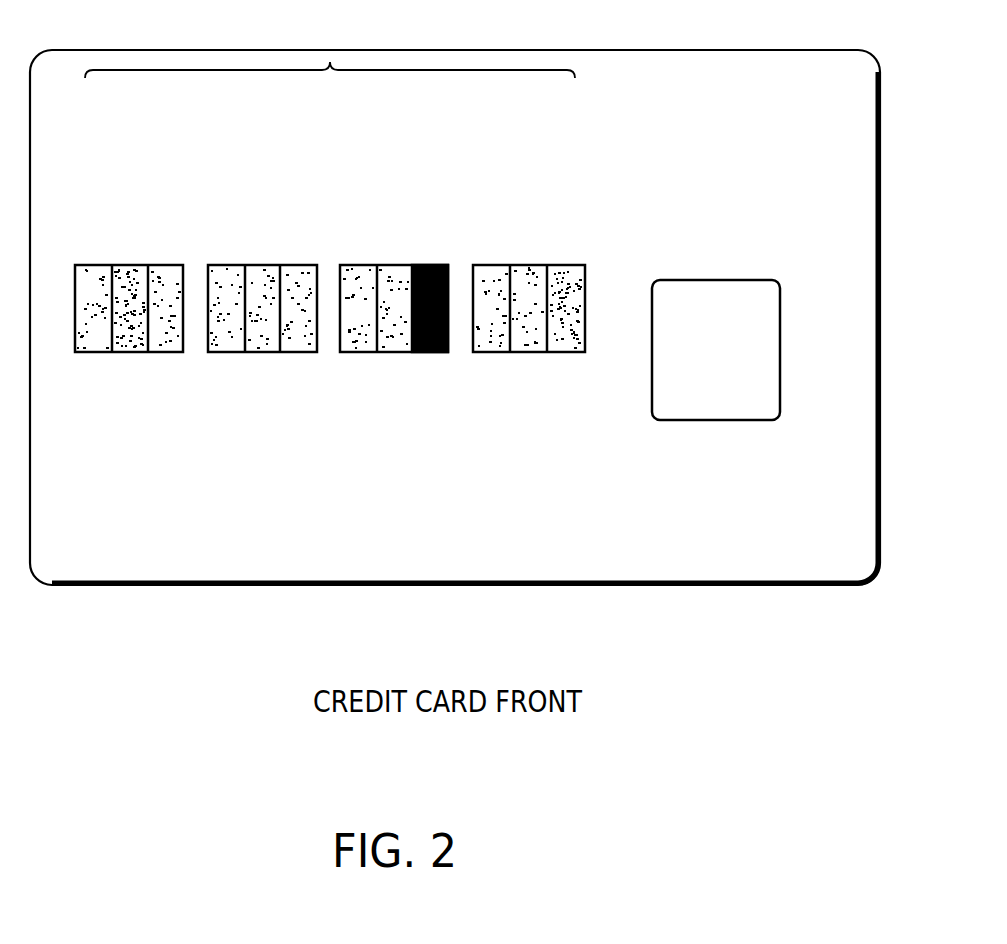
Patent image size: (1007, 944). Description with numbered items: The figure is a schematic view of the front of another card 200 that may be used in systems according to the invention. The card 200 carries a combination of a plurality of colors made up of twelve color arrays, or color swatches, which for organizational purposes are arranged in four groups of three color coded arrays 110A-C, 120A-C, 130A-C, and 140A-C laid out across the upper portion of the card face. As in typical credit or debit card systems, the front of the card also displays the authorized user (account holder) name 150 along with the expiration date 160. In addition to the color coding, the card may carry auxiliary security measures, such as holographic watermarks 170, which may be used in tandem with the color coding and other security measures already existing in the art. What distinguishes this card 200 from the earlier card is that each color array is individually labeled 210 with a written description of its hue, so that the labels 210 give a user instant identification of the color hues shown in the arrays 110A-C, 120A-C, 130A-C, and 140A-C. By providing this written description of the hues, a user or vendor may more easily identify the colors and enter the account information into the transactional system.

The first group of color coded arrays 110A-C is at (183, 365).
The second group of color coded arrays 120A-C is at (317, 365).
The third group of color coded arrays 130A-C is at (448, 365).
The fourth group of color coded arrays 140A-C is at (585, 365).
The authorized user name 150 is at (198, 553).
The expiration date 160 is at (363, 503).
The holographic watermarks 170 is at (712, 280).
The card 200 is at (725, 50).
The color array labels 210 is at (330, 62).